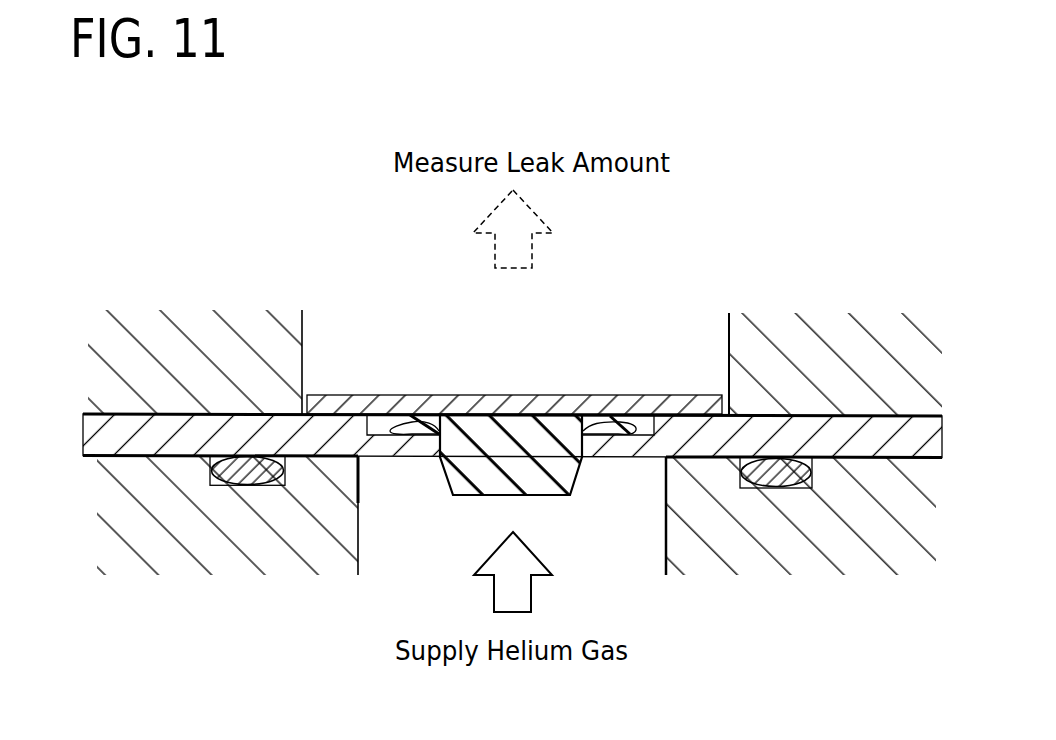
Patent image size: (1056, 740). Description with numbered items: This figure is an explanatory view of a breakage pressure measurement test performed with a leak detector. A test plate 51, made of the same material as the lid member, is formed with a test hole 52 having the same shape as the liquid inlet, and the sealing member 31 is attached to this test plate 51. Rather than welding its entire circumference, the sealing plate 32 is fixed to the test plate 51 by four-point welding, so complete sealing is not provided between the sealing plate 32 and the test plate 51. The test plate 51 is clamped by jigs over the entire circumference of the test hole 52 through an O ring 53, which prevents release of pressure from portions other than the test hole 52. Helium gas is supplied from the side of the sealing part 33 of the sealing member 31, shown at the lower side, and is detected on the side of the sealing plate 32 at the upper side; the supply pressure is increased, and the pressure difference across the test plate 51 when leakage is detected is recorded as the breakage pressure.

The sealing member 31 is at (514, 437).
The sealing plate 32 is at (565, 407).
The sealing part 33 is at (472, 486).
The test plate 51 is at (920, 440).
The test hole 52 is at (654, 440).
The O ring 53 is at (778, 477).